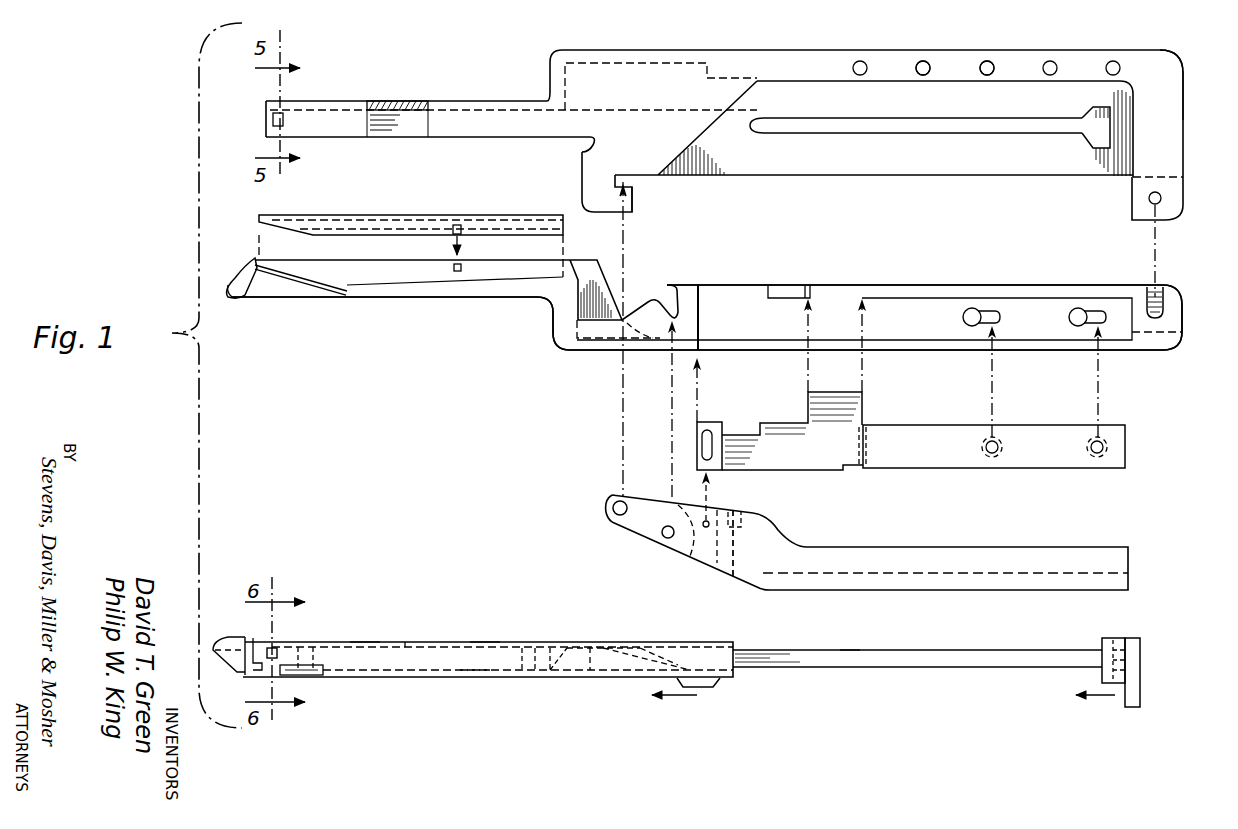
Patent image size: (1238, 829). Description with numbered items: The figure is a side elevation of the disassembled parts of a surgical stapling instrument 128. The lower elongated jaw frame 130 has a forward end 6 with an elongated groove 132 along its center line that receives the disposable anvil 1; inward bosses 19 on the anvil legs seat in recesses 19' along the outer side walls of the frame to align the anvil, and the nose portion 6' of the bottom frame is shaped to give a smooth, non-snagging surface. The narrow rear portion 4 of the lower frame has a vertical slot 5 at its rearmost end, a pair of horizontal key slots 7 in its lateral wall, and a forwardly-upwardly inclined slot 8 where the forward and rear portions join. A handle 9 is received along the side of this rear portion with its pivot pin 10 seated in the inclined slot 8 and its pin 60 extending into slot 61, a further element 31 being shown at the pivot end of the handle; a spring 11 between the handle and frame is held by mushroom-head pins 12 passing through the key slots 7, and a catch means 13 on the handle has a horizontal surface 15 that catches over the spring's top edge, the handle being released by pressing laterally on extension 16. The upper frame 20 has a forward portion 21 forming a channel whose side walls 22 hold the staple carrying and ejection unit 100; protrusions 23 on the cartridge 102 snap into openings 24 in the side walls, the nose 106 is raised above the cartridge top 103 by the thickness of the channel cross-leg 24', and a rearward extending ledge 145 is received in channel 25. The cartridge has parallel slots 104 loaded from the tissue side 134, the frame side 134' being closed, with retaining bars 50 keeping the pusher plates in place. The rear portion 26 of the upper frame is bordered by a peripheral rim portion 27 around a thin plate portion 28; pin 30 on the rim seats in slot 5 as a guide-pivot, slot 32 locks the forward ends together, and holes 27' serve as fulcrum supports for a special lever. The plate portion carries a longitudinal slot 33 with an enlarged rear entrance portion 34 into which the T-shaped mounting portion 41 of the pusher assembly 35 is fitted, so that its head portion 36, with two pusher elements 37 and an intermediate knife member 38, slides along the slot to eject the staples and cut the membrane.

The anvil 1 is at (368, 215).
The rear portion of the lower frame 4 is at (746, 291).
The vertical slot 5 is at (1166, 305).
The forward end of the lower frame 6 is at (262, 290).
The nose portion of the bottom frame 6' is at (255, 643).
The key slots 7 is at (985, 312).
The inclined slot 8 is at (660, 301).
The handle 9 is at (980, 560).
The pivot pin 10 is at (665, 538).
The spring 11 is at (947, 456).
The mushroom-head pins 12 is at (1091, 452).
The catch means 13 is at (732, 508).
The horizontal surface 15 is at (733, 578).
The extension 16 is at (843, 403).
The inward bosses 19 is at (465, 219).
The recesses 19' is at (447, 294).
The upper frame 20 is at (787, 52).
The forward portion of the upper frame 21 is at (440, 101).
The side walls 22 is at (412, 128).
The protrusions 23 is at (280, 650).
The openings 24 is at (251, 121).
The channel cross-leg 24' is at (397, 89).
The channel 25 is at (588, 140).
The rear portion of the upper frame 26 is at (890, 55).
The peripheral rim portion 27 is at (1157, 68).
The holes 27' is at (960, 45).
The plate portion 28 is at (857, 158).
The pin 30 is at (1149, 201).
The pivot pin 31 is at (612, 510).
The slot 32 is at (632, 181).
The slot 33 is at (977, 128).
The enlarged rear entrance portion 34 is at (1097, 128).
The pusher assembly 35 is at (992, 672).
The head portion 36 is at (1131, 702).
The pusher elements 37 is at (850, 658).
The knife member 38 is at (703, 689).
The T-shaped mounting portion 41 is at (1119, 641).
The retaining bars 50 is at (590, 677).
The pin 60 is at (712, 553).
The slot 61 is at (710, 432).
The staple carrying and ejection unit 100 is at (420, 641).
The cartridge 102 is at (486, 643).
The top of the cartridge 103 is at (350, 642).
The slots 104 is at (565, 644).
The nose 106 is at (233, 641).
The medical instrument 128 is at (509, 306).
The lower elongated jaw frame 130 is at (372, 300).
The elongated groove 132 is at (324, 265).
The tissue side 134 is at (356, 693).
The frame side 134' is at (414, 617).
The rearward extending ledge 145 is at (474, 678).